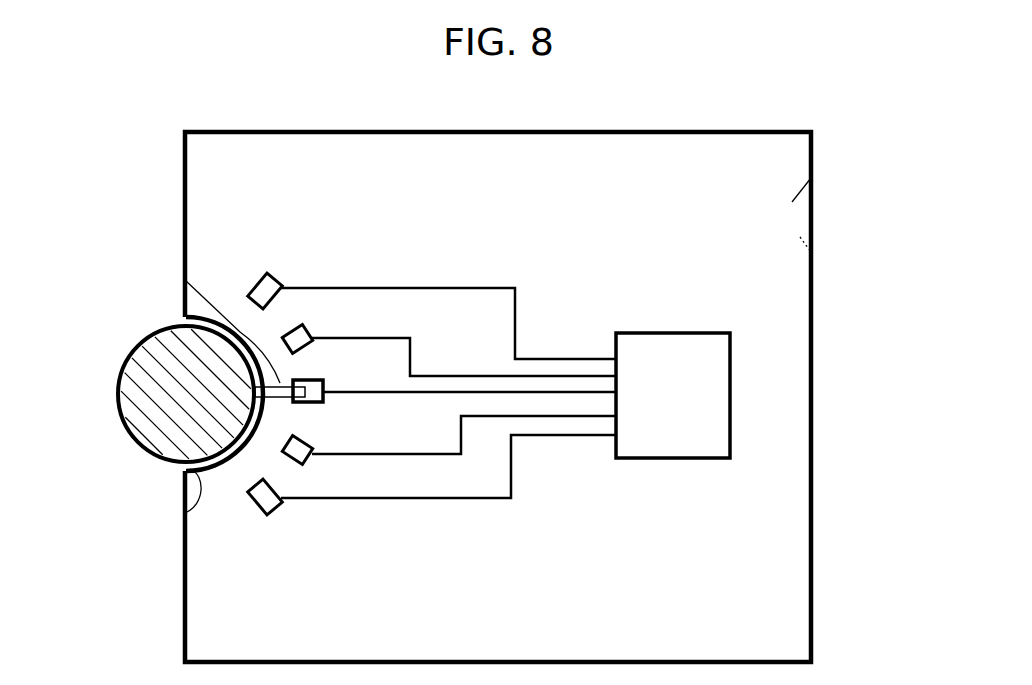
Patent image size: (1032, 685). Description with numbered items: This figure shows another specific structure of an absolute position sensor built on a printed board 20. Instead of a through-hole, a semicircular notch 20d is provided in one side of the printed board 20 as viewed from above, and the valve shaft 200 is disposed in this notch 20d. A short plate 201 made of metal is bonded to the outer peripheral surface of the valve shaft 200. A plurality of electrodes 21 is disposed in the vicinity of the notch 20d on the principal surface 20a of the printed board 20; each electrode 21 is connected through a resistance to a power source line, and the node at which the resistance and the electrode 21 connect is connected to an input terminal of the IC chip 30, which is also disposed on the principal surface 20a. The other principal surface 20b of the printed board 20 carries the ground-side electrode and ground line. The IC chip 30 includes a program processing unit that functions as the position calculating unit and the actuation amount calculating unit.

The printed board 20 is at (812, 130).
The principal surface 20a is at (811, 178).
The other principal surface 20b is at (811, 252).
The semicircular notch 20d is at (185, 513).
The short plate 201 is at (185, 280).
The valve shaft 200 is at (128, 398).
The electrode 21 is at (270, 282).
The IC chip 30 is at (730, 333).